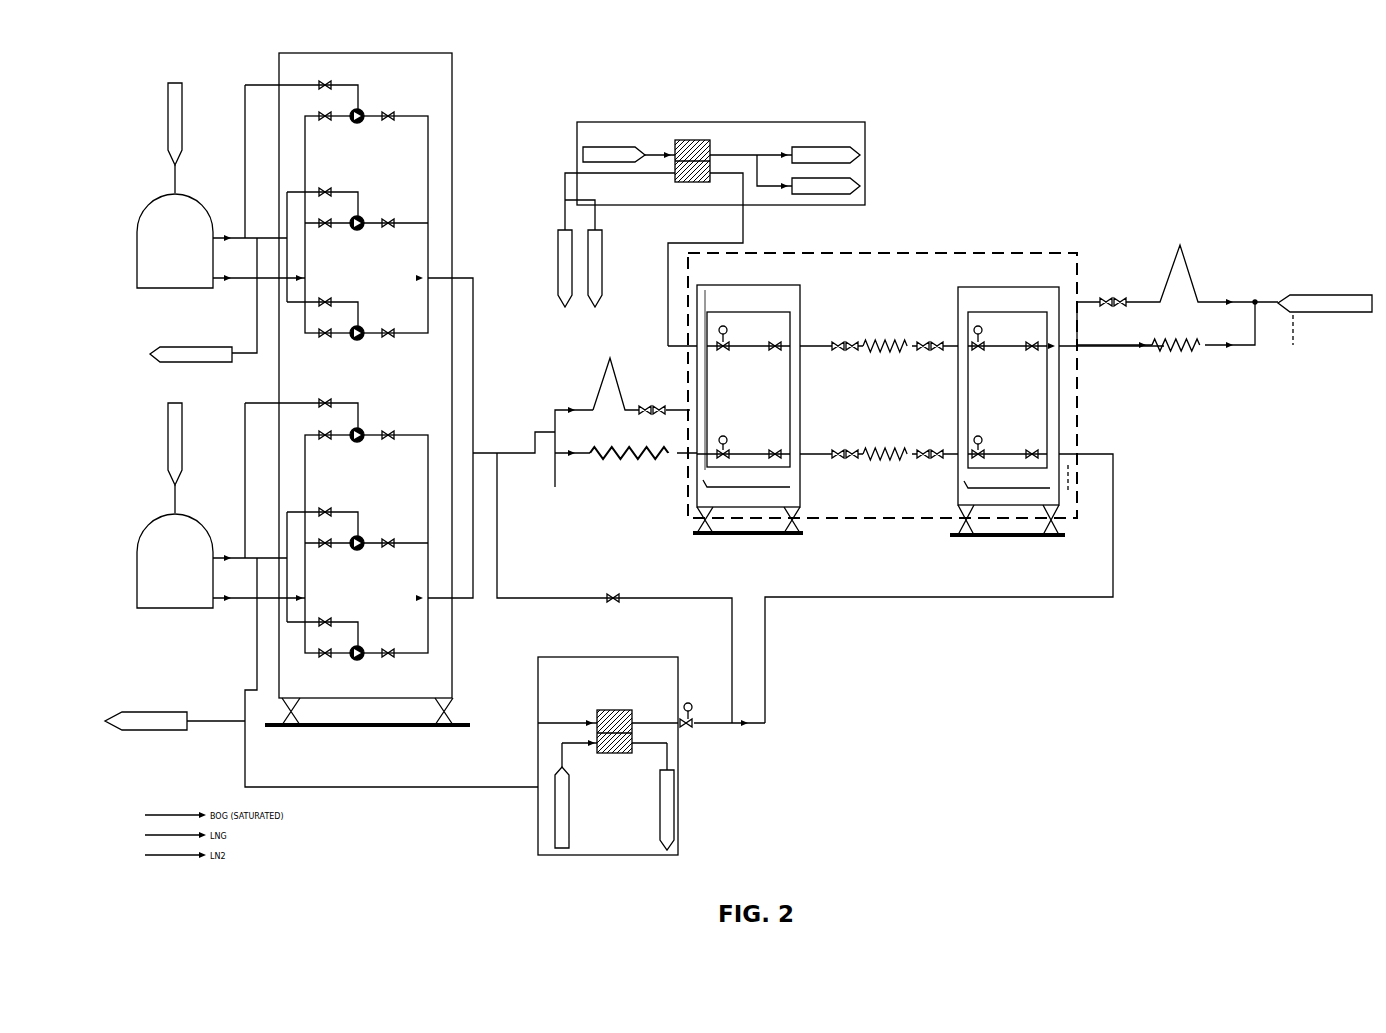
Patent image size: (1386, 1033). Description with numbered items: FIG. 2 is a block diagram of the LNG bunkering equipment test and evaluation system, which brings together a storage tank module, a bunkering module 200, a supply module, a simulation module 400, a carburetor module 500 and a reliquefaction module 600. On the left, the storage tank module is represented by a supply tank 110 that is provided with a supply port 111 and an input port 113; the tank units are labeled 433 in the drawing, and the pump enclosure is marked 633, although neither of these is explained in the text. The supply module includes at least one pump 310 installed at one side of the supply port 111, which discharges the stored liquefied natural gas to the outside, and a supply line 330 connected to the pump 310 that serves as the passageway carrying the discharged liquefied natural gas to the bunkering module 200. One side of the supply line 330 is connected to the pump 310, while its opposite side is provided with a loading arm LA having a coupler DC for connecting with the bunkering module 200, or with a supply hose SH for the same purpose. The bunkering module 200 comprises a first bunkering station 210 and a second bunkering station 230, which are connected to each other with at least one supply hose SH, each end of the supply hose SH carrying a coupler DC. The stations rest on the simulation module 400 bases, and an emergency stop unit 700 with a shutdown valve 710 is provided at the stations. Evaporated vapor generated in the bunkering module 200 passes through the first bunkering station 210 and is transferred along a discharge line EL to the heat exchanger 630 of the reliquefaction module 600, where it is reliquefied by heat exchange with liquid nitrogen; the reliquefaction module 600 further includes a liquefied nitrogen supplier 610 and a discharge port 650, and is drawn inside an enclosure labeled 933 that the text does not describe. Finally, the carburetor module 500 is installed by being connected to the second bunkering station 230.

The supply tank 110 is at (198, 214).
The supply port 111 is at (225, 258).
The input port 113 is at (178, 185).
The LNG tank unit 433 is at (179, 366).
The pump 310 is at (361, 118).
The supply line 330 is at (516, 452).
The pump unit enclosure 633 is at (453, 136).
The simulation module 400 is at (415, 726).
The bunkering module 200 is at (1083, 386).
The first bunkering station 210 is at (778, 303).
The second bunkering station 230 is at (990, 301).
The shutdown valve 710 is at (716, 305).
The emergency stop unit 700 is at (719, 330).
The carburetor module 500 is at (1320, 292).
The liquefied nitrogen supplier 610 is at (615, 146).
The heat exchanger 630 is at (690, 140).
The discharge port 650 is at (565, 172).
The heat exchange unit enclosure 933 is at (721, 142).
The reliquefaction module 600 is at (679, 793).
The discharge line EL is at (743, 222).
The loading arm LA is at (601, 395).
The coupler DC is at (652, 401).
The supply hose SH is at (631, 462).